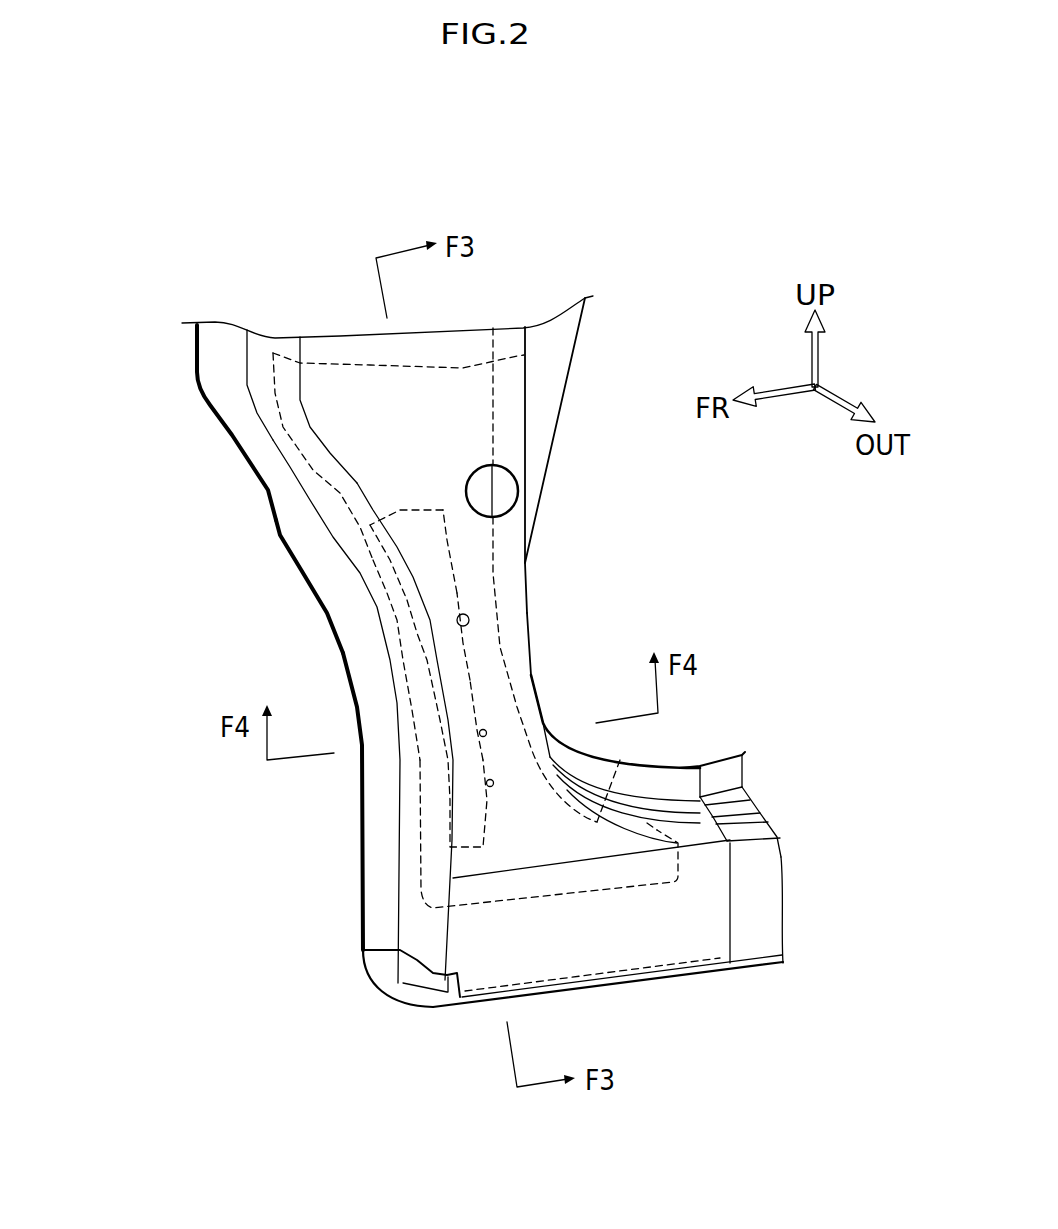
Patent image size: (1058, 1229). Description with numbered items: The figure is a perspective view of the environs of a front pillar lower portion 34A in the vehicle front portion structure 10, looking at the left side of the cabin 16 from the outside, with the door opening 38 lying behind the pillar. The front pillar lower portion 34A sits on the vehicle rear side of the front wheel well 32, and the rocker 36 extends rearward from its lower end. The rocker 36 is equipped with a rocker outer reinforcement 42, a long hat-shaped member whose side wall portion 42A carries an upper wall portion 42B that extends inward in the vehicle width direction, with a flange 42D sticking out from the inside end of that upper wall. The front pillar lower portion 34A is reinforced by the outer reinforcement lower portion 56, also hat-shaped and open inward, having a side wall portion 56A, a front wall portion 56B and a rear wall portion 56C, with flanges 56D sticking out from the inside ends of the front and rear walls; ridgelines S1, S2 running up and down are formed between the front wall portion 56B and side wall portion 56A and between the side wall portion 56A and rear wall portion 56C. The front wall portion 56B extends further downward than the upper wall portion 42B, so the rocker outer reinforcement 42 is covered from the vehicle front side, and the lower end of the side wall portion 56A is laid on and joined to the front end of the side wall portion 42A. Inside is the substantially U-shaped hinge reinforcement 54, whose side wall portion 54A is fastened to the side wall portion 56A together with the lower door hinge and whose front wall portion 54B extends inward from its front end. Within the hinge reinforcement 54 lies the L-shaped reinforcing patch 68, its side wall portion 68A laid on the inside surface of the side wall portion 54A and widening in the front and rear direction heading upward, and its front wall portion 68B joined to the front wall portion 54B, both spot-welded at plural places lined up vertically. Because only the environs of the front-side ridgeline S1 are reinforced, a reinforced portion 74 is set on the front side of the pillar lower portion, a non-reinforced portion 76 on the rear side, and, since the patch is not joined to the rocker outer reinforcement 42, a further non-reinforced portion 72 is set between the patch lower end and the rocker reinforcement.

The vehicle front portion structure 10 is at (490, 602).
The cabin 16 is at (792, 564).
The front wheel well 32 is at (237, 962).
The front pillar lower portion 34A is at (283, 614).
The rocker 36 is at (668, 988).
The door opening 38 is at (567, 387).
The rocker outer reinforcement 42 is at (753, 964).
The side wall portion 42A is at (763, 903).
The upper wall portion 42B is at (757, 827).
The flange 42D is at (723, 777).
The hinge reinforcement 54 is at (297, 438).
The side wall portion 54A is at (355, 357).
The front wall portion 54B is at (343, 523).
The outer reinforcement lower portion 56 is at (545, 496).
The side wall portion 56A is at (460, 350).
The front wall portion 56B is at (403, 768).
The rear wall portion 56C is at (633, 823).
The flange 56D is at (237, 423).
The reinforcing patch 68 is at (468, 669).
The side wall portion 68A is at (457, 573).
The front wall portion 68B is at (385, 612).
The non-reinforced portion 72 is at (450, 863).
The reinforced portion 74 is at (450, 660).
The non-reinforced portion 76 is at (500, 693).
The ridgeline S1 is at (340, 477).
The ridgeline S2 is at (530, 607).